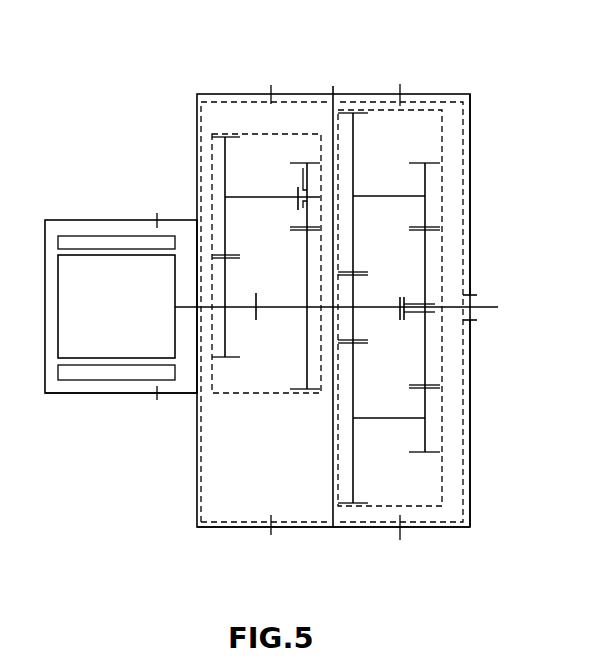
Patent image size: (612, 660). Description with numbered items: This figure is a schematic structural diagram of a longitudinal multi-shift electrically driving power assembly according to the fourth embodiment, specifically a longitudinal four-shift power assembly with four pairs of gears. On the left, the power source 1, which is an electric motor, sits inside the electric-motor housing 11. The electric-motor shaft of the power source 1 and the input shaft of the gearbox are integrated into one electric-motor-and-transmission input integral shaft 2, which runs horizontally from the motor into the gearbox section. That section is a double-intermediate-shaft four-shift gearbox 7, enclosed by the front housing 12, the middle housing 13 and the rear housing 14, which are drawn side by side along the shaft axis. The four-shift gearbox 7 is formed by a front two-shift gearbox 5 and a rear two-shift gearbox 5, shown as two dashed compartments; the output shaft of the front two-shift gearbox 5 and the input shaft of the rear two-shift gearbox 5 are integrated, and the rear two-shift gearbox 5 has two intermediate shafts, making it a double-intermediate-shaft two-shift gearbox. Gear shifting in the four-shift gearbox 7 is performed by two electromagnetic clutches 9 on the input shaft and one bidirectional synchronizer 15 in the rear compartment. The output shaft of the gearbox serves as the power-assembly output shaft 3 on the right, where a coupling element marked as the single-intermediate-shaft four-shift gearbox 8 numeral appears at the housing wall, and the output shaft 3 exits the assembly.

The power source 1 is at (108, 294).
The electric-motor-and-transmission input integral shaft 2 is at (205, 307).
The power-assembly output shaft 3 is at (485, 295).
The two-shift gearbox 5 is at (304, 134).
The double-intermediate-shaft four-shift gearbox 7 is at (322, 102).
The single-intermediate-shaft four-shift gearbox 8 is at (470, 309).
The electromagnetic clutches 9 is at (299, 190).
The electric-motor housing 11 is at (118, 393).
The front housing 12 is at (197, 527).
The middle housing 13 is at (307, 527).
The rear housing 14 is at (423, 528).
The bidirectional synchronizer 15 is at (398, 320).